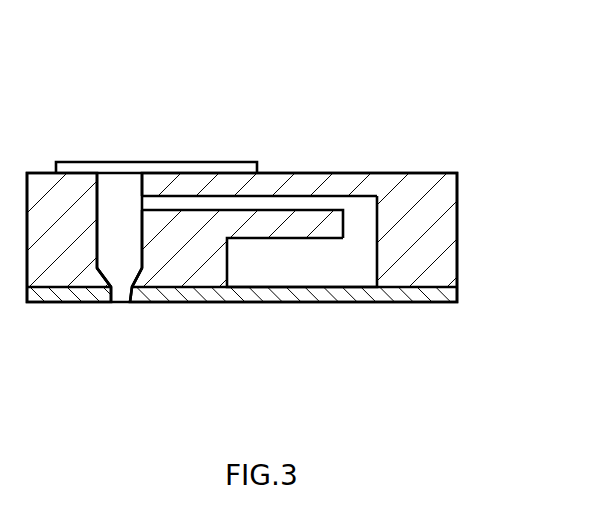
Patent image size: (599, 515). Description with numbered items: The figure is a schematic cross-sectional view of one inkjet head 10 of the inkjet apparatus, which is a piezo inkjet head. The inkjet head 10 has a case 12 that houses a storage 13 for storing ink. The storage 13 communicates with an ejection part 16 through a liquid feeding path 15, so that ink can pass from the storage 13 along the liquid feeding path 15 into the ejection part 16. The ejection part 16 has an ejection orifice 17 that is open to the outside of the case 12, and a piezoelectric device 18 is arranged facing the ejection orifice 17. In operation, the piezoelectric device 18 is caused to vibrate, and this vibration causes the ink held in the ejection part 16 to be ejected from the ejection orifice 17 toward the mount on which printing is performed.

The inkjet head 10 is at (508, 83).
The case 12 is at (443, 202).
The storage 13 is at (306, 259).
The liquid feeding path 15 is at (261, 207).
The ejection part 16 is at (115, 229).
The ejection orifice 17 is at (120, 305).
The piezoelectric device 18 is at (200, 167).